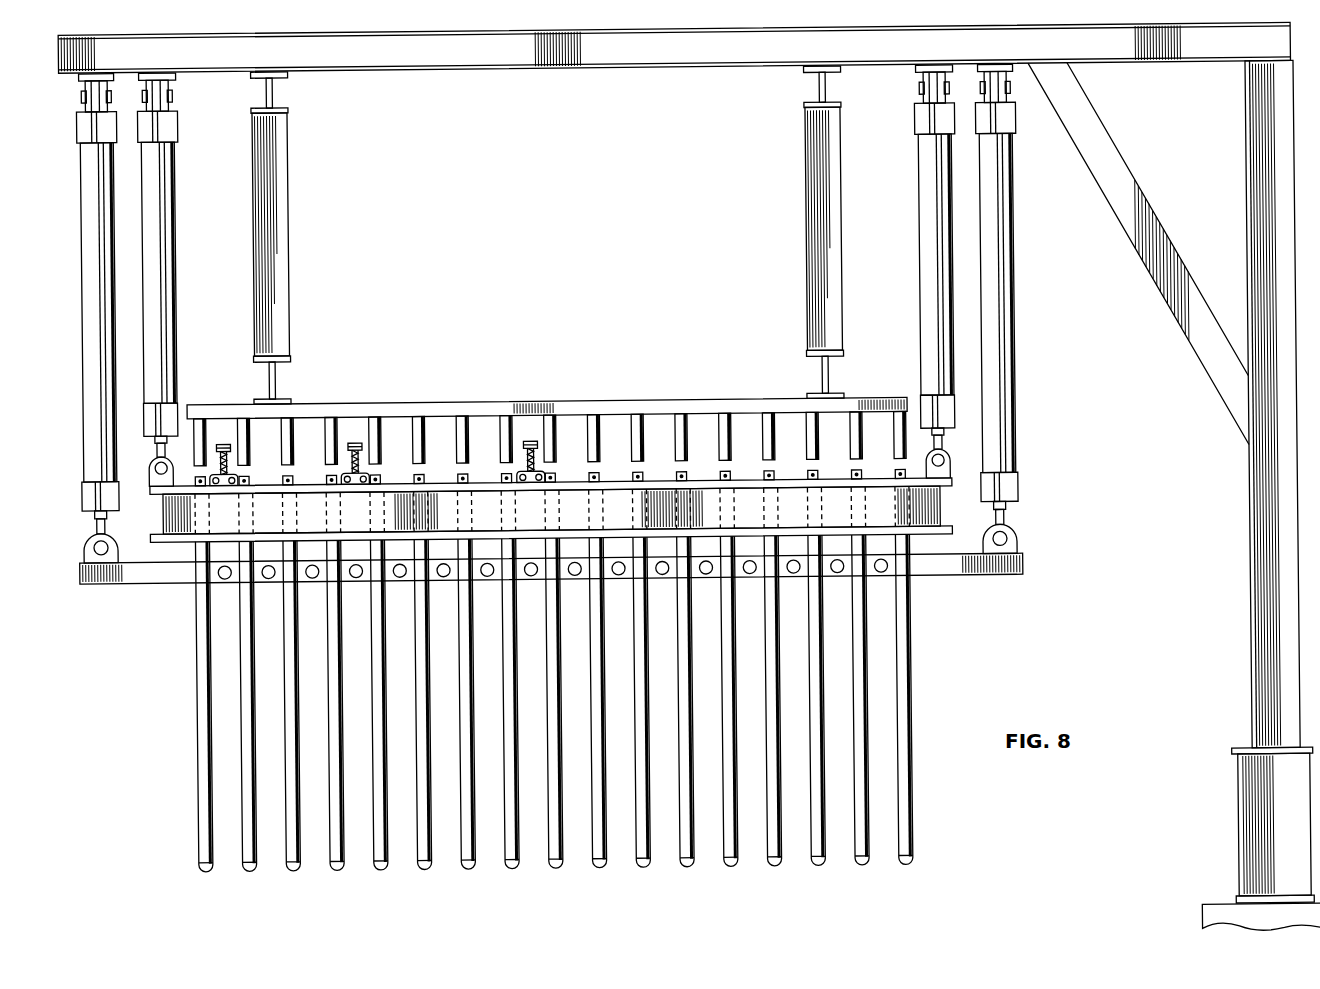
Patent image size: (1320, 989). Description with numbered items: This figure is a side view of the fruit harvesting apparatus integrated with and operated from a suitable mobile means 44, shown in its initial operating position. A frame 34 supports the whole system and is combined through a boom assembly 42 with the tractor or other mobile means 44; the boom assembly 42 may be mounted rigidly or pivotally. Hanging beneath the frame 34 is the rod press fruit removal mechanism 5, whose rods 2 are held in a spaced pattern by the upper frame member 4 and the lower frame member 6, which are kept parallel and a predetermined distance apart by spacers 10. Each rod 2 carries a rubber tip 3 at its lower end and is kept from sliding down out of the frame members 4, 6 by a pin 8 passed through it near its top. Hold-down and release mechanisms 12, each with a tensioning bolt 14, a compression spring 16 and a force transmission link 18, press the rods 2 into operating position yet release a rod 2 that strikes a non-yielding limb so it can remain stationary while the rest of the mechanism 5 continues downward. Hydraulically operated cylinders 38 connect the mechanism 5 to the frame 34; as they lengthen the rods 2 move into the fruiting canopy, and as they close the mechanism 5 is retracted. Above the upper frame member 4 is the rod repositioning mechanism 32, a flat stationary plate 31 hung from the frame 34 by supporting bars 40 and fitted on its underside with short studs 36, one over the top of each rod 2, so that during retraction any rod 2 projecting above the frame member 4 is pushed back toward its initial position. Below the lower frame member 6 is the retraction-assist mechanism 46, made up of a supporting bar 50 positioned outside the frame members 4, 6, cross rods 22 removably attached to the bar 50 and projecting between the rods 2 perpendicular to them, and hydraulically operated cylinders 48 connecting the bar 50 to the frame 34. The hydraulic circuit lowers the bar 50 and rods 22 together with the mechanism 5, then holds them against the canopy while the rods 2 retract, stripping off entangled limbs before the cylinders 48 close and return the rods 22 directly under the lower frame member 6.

The rods 2 is at (208, 722).
The rubber tip 3 is at (334, 866).
The upper frame member 4 is at (953, 481).
The rod press fruit removal mechanism 5 is at (438, 546).
The lower frame member 6 is at (941, 535).
The pin 8 is at (676, 476).
The spacers 10 is at (942, 509).
The rod hold-down and release mechanism 12 is at (221, 437).
The tensioning bolt 14 is at (232, 445).
The compression spring 16 is at (229, 459).
The force transmission link 18 is at (221, 483).
The rods 22 is at (312, 575).
The flat stationary plate 31 is at (641, 399).
The rod repositioning mechanism 32 is at (546, 399).
The frame 34 is at (579, 67).
The studs 36 is at (458, 432).
The hydraulically operated cylinders 38 is at (172, 272).
The supporting bars 40 is at (292, 268).
The boom assembly 42 is at (1250, 561).
The mobile means 44 is at (1200, 915).
The retraction-assist mechanism 46 is at (165, 582).
The hydraulically operated cylinders 48 is at (86, 266).
The supporting bar 50 is at (963, 580).